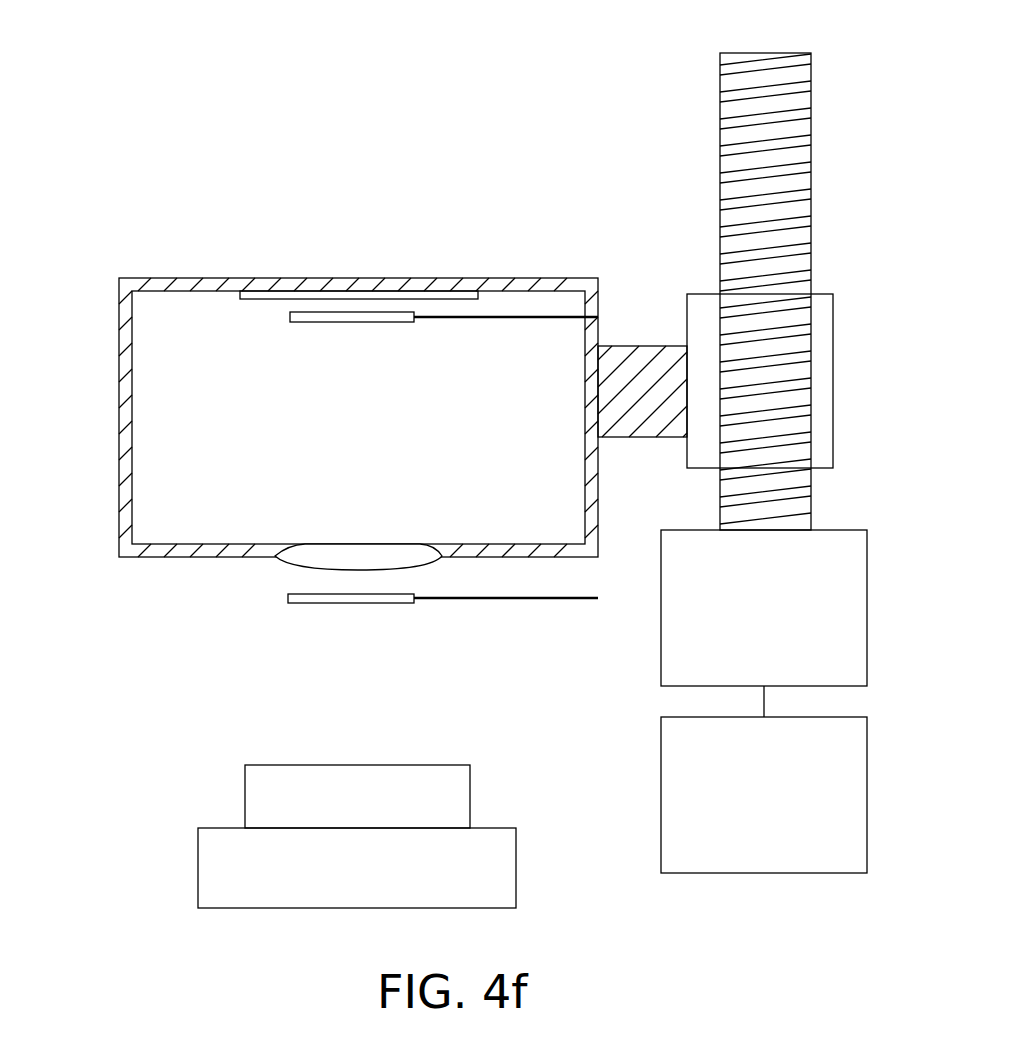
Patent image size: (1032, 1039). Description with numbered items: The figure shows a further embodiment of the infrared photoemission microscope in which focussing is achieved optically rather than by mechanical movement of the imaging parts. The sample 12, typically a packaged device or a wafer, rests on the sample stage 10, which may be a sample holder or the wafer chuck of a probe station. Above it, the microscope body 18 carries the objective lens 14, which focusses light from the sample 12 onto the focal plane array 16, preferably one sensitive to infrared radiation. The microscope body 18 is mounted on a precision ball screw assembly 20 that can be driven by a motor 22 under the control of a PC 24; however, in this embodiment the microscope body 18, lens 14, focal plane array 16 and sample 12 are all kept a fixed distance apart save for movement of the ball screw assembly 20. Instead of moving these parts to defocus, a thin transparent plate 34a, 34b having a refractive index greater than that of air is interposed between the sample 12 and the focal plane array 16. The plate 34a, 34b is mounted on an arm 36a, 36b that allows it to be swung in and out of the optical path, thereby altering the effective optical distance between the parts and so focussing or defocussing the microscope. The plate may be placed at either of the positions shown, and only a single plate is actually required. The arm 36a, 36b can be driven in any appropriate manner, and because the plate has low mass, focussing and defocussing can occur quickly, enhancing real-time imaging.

The sample stage 10 is at (516, 870).
The sample 12 is at (471, 792).
The lens 14 is at (290, 566).
The focal plane array 16 is at (281, 289).
The microscope body 18 is at (119, 418).
The ball screw assembly 20 is at (720, 78).
The motor 22 is at (780, 618).
The PC 24 is at (780, 807).
The transparent plate 34a is at (300, 611).
The transparent plate 34b is at (302, 329).
The arm 36a is at (503, 612).
The arm 36b is at (503, 316).